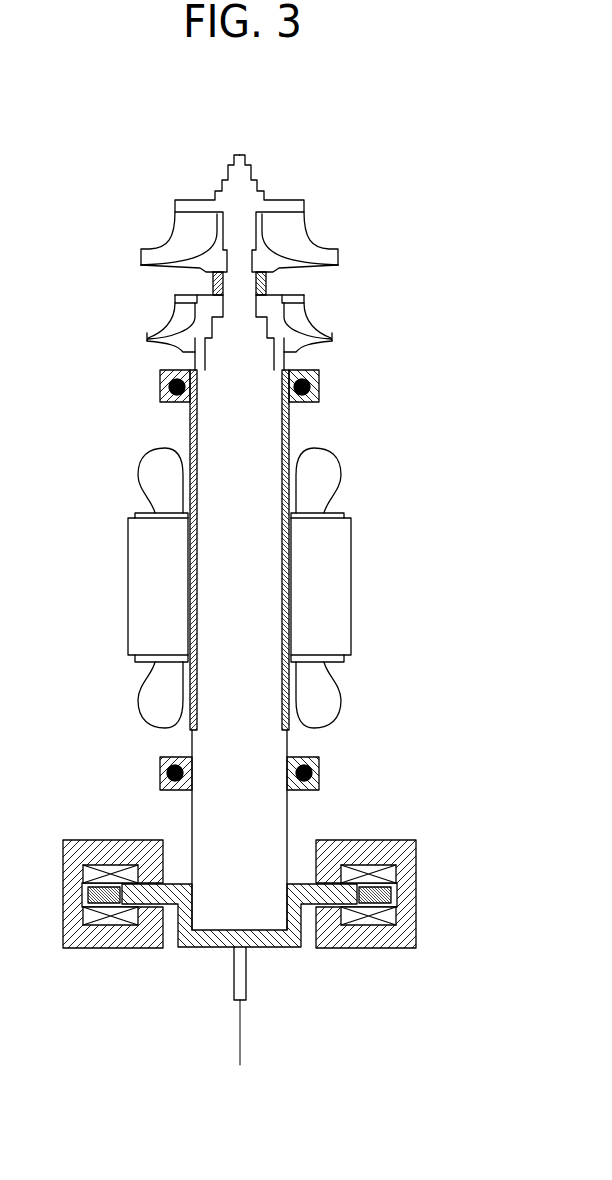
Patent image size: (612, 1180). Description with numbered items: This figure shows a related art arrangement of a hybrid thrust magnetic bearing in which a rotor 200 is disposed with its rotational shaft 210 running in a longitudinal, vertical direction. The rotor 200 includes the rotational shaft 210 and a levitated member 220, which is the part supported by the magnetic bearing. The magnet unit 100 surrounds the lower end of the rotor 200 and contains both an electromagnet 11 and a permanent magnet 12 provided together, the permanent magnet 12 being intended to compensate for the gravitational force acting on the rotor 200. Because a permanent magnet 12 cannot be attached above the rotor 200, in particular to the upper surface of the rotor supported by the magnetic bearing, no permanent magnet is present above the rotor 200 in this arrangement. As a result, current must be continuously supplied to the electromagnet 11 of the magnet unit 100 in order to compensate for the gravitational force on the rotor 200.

The rotor 200 is at (382, 227).
The magnet unit 100 is at (264, 835).
The rotational shaft 210 is at (198, 818).
The levitated member 220 is at (263, 952).
The electromagnet 11 is at (365, 868).
The permanent magnet 12 is at (391, 893).